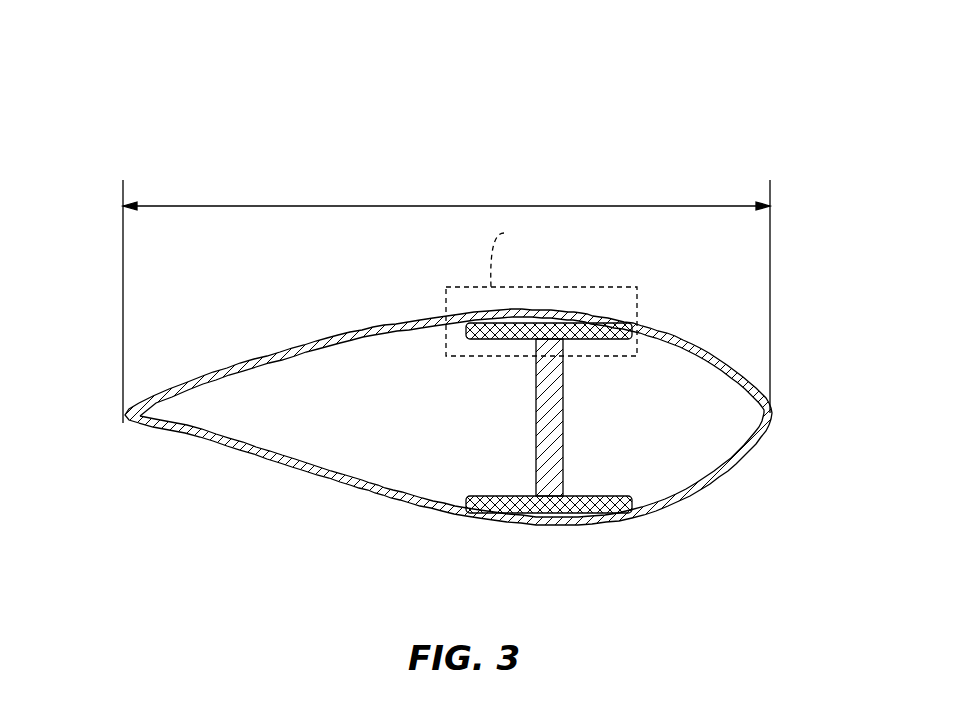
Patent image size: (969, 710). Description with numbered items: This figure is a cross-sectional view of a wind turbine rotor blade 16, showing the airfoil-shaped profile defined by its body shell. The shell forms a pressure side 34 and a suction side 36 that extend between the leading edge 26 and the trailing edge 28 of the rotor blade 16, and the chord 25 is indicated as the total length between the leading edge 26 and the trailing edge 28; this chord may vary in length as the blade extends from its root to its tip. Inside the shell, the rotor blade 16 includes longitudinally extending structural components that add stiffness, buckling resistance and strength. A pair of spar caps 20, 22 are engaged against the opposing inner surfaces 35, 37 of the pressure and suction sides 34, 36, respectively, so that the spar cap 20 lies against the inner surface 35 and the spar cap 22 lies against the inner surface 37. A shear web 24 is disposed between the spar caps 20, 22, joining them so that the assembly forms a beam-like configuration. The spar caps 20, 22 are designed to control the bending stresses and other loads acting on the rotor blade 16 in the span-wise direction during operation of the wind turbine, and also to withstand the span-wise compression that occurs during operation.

The rotor blade 16 is at (450, 333).
The spar cap 20 is at (590, 322).
The spar cap 22 is at (598, 520).
The shear web 24 is at (564, 460).
The chord 25 is at (330, 205).
The leading edge 26 is at (774, 416).
The trailing edge 28 is at (123, 419).
The pressure side 34 is at (378, 497).
The inner surface of pressure side 35 is at (287, 450).
The suction side 36 is at (352, 330).
The inner surface of suction side 37 is at (322, 345).